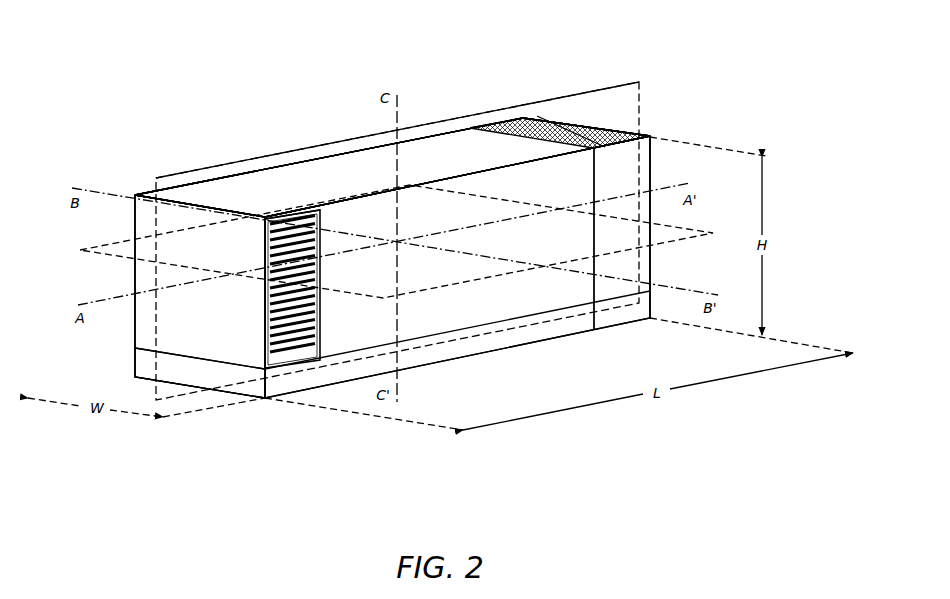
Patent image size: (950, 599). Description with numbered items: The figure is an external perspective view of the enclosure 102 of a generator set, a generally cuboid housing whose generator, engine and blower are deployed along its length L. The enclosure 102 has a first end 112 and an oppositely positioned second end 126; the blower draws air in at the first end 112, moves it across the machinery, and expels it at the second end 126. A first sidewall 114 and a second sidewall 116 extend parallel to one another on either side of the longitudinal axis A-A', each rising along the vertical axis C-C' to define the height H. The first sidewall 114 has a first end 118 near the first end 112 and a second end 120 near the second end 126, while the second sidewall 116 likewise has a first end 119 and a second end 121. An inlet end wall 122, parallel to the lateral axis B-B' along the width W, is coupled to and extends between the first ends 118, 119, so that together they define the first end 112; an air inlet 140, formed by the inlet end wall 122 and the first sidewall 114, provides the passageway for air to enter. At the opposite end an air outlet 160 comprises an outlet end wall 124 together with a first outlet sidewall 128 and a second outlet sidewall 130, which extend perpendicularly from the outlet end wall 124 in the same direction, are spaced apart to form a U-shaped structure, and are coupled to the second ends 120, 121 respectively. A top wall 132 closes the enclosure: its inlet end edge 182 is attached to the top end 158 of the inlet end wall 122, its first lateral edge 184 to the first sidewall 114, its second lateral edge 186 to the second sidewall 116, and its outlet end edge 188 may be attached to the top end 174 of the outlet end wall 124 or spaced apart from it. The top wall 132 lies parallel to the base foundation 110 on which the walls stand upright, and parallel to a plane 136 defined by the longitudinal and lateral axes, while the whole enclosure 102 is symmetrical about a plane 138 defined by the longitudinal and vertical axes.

The enclosure 102 is at (140, 40).
The base foundation 110 is at (442, 350).
The first end 112 is at (153, 167).
The first sidewall 114 is at (493, 302).
The second sidewall 116 is at (282, 164).
The first end of first sidewall 118 is at (272, 312).
The first end of second sidewall 119 is at (133, 231).
The second end of first sidewall 120 is at (595, 264).
The second end of second sidewall 121 is at (445, 145).
The inlet end wall 122 is at (143, 334).
The outlet end wall 124 is at (640, 136).
The second end 126 is at (510, 112).
The first outlet sidewall 128 is at (627, 140).
The second outlet sidewall 130 is at (478, 128).
The top wall 132 is at (355, 163).
The plane 136 is at (127, 257).
The plane 138 is at (212, 166).
The air inlet 140 is at (113, 178).
The top end of inlet end wall 158 is at (257, 217).
The air outlet 160 is at (577, 118).
The top end of outlet end wall 174 is at (610, 131).
The inlet end edge 182 is at (193, 207).
The first lateral edge 184 is at (440, 177).
The second lateral edge 186 is at (305, 155).
The outlet end edge 188 is at (540, 121).